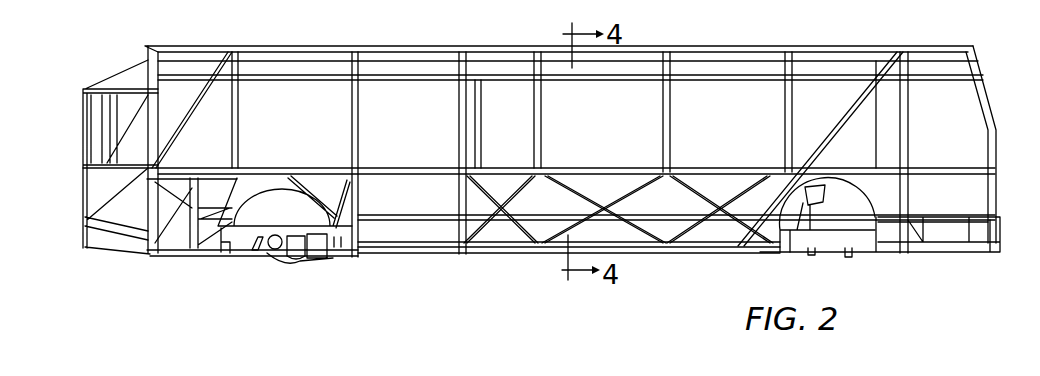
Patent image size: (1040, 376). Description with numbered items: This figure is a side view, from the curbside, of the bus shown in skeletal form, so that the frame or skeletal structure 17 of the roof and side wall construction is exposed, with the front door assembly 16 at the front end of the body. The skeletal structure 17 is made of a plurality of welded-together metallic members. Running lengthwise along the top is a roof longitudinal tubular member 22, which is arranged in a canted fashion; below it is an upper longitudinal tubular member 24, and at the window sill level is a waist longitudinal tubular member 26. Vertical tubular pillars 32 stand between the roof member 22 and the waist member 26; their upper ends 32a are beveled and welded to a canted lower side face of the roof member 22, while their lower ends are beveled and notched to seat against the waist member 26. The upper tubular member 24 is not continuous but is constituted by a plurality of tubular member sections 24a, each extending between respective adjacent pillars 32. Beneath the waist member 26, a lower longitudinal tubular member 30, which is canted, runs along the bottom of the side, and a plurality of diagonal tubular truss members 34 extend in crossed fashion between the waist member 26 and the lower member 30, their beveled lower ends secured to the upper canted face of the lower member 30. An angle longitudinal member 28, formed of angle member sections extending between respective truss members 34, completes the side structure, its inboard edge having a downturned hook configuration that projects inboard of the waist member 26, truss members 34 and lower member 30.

The front door assembly 16 is at (970, 113).
The skeletal structure 17 is at (818, 44).
The roof longitudinal tubular member 22 is at (707, 60).
The upper longitudinal tubular member 24 is at (721, 87).
The tubular member sections 24a is at (292, 81).
The waist longitudinal tubular member 26 is at (395, 167).
The angle longitudinal member 28 is at (627, 210).
The lower longitudinal tubular member 30 is at (497, 255).
The vertical tubular pillars 32 is at (239, 148).
The upper ends of pillars 32a is at (535, 138).
The diagonal tubular truss members 34 is at (690, 192).